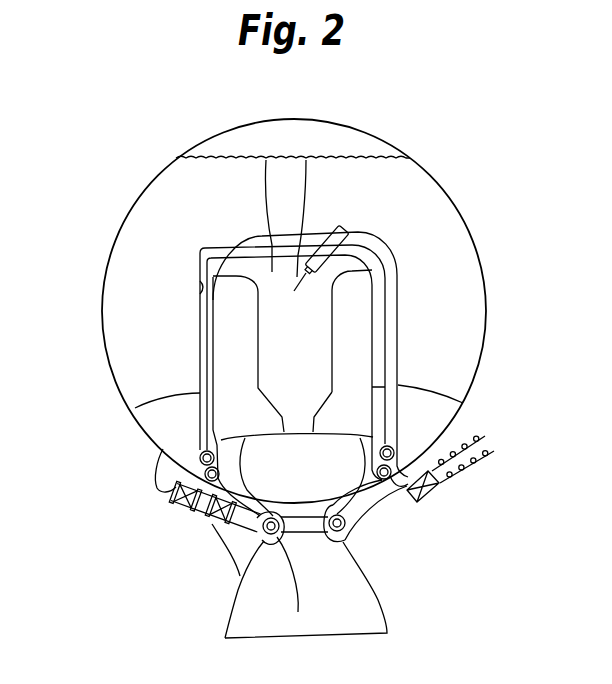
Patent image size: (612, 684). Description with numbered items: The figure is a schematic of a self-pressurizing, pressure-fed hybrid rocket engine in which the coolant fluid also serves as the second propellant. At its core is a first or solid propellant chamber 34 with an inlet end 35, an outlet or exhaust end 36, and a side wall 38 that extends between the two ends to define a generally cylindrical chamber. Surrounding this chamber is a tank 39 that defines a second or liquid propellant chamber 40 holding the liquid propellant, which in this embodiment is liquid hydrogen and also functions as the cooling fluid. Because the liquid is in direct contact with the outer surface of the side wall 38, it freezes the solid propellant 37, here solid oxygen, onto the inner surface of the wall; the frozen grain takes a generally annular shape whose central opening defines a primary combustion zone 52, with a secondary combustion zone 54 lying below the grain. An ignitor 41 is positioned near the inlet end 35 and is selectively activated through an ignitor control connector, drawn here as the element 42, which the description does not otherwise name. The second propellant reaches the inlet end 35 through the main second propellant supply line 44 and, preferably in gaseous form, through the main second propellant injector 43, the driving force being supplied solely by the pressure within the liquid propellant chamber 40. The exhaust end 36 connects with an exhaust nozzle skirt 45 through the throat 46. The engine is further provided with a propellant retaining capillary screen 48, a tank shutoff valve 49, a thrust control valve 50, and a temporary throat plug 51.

The solid propellant chamber 34 is at (337, 234).
The inlet end 35 is at (266, 160).
The exhaust end 36 is at (222, 468).
The solid propellant 37 is at (197, 511).
The side wall 38 is at (200, 340).
The tank 39 is at (137, 197).
The liquid propellant chamber 40 is at (230, 143).
The ignitor 41 is at (346, 228).
The latch arm 42 is at (417, 500).
The main second propellant injector 43 is at (320, 248).
The main second propellant supply line 44 is at (200, 290).
The exhaust nozzle skirt 45 is at (235, 572).
The throat 46 is at (298, 612).
The propellant retaining capillary screen 48 is at (163, 418).
The tank shutoff valve 49 is at (173, 510).
The thrust control valve 50 is at (223, 508).
The temporary throat plug 51 is at (303, 535).
The primary combustion zone 52 is at (297, 327).
The secondary combustion zone 54 is at (328, 475).